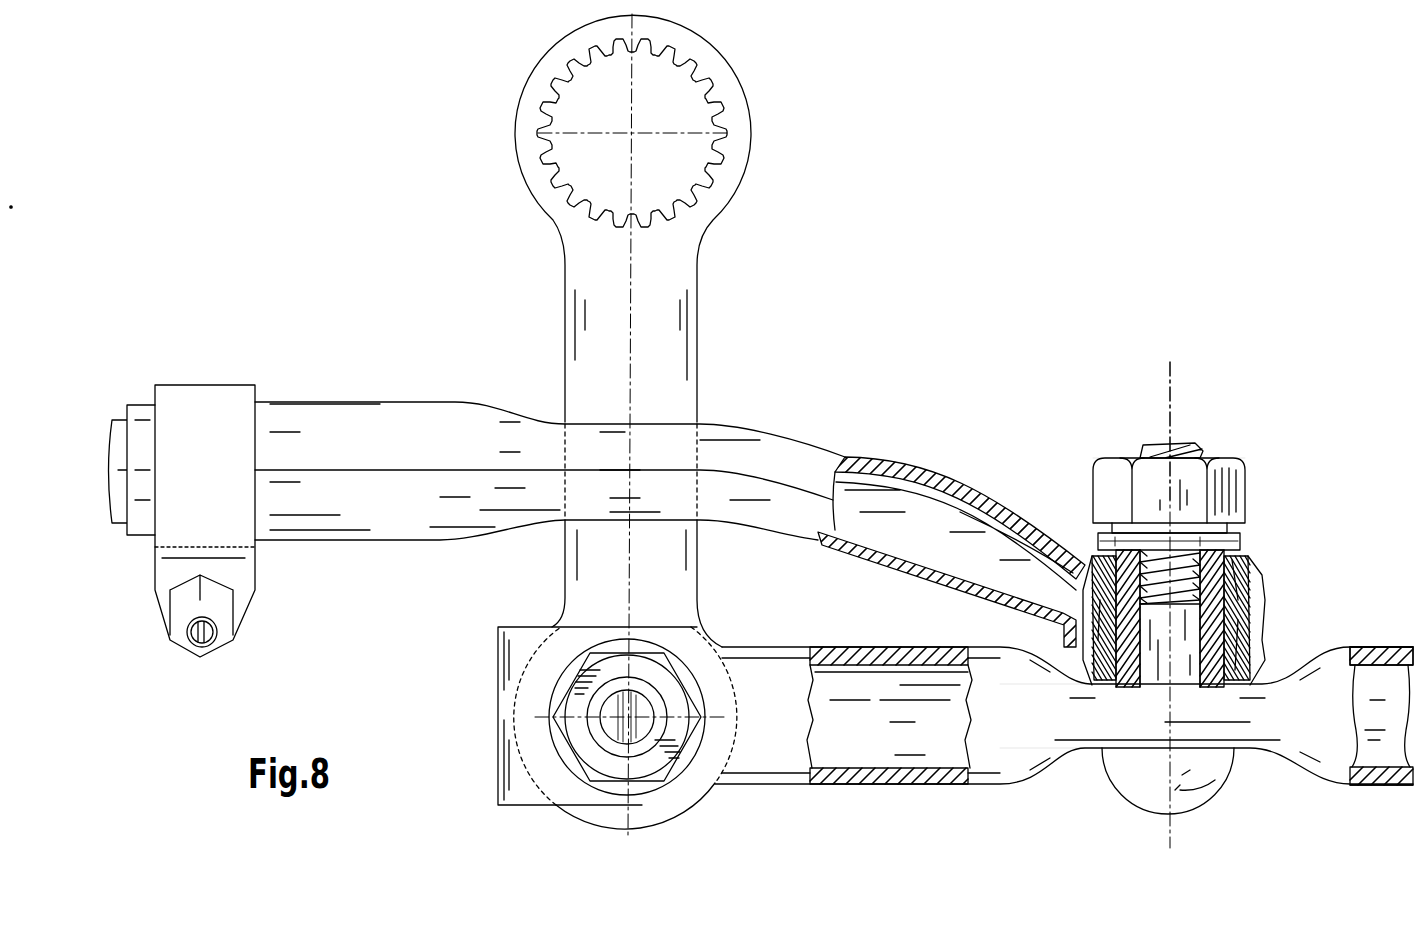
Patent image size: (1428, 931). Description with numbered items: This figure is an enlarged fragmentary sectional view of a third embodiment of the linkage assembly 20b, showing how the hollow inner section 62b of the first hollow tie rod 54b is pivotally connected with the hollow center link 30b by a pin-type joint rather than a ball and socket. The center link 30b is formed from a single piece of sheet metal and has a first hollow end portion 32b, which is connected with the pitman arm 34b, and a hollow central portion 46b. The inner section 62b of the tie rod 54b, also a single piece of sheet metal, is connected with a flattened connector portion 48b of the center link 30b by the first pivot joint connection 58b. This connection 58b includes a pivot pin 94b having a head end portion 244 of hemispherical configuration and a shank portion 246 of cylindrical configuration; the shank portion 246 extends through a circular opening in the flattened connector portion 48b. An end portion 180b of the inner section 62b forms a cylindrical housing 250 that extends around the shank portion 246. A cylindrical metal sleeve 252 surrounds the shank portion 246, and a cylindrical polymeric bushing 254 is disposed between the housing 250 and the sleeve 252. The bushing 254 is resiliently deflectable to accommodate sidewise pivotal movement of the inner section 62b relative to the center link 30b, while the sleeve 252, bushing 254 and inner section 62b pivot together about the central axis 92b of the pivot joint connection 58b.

The linkage assembly 20b is at (1152, 236).
The hollow center link 30b is at (1357, 790).
The first hollow end portion 32b is at (765, 773).
The pitman arm 34b is at (678, 240).
The hollow central portion 46b is at (1386, 645).
The connector portion 48b is at (1095, 715).
The first hollow tie rod 54b is at (784, 427).
The first pivot joint connection 58b is at (1133, 435).
The hollow inner section 62b is at (455, 396).
The central axis 92b is at (1172, 368).
The pivot pin 94b is at (1204, 436).
The end portion 180b is at (1031, 513).
The head end portion 244 is at (1200, 788).
The shank portion 246 is at (1243, 604).
The cylindrical housing 250 is at (1250, 640).
The cylindrical metal sleeve 252 is at (1240, 562).
The polymeric bushing 254 is at (1243, 582).